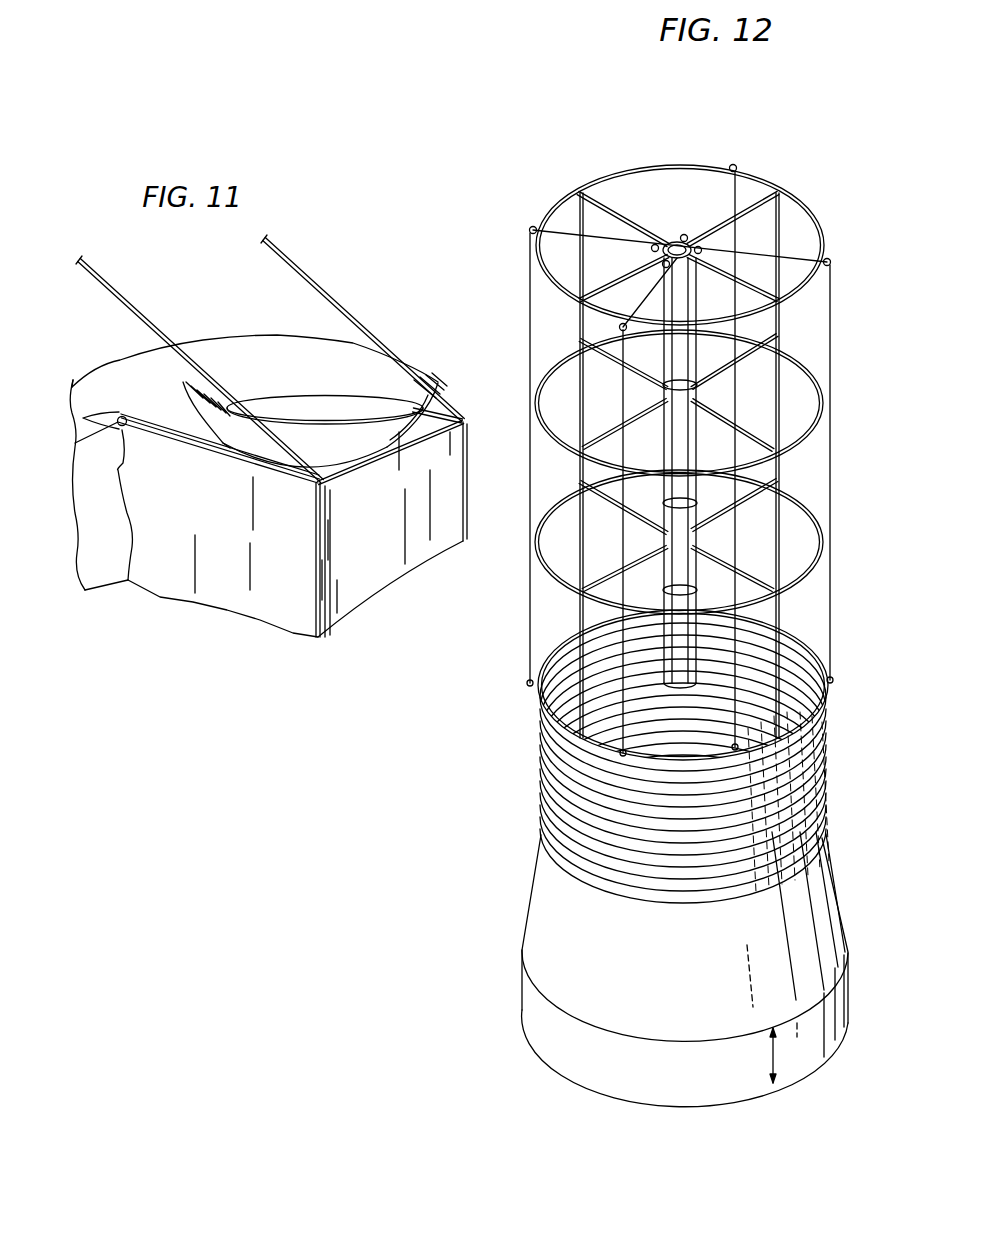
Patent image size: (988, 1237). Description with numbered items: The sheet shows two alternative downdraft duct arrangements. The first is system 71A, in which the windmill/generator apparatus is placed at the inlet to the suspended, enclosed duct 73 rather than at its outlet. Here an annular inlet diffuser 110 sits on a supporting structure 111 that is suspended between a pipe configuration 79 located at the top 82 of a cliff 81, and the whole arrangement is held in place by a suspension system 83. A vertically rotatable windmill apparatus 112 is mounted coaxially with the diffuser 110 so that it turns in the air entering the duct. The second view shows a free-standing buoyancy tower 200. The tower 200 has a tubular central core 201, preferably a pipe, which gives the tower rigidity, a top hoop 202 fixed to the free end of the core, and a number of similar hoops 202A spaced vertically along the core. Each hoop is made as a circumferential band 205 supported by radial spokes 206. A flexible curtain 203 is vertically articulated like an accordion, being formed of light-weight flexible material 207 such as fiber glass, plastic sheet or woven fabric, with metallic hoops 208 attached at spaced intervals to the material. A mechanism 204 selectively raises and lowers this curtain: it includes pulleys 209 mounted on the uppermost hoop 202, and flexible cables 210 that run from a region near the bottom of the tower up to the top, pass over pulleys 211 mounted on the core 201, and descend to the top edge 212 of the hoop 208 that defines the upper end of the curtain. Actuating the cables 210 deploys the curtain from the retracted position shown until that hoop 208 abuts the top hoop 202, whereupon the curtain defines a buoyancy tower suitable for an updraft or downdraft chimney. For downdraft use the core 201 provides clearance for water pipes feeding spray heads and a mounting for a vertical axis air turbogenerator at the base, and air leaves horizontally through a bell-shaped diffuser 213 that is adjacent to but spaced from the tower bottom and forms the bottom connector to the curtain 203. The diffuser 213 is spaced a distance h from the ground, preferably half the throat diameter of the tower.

In FIG. 11, the system 71A is at (452, 368).
In FIG. 11, the duct 73 is at (424, 509).
In FIG. 11, the pipe configuration 79 is at (188, 445).
In FIG. 11, the cliff 81 is at (100, 572).
In FIG. 11, the top 82 is at (131, 370).
In FIG. 11, the suspension system 83 is at (131, 304).
In FIG. 11, the annular inlet diffuser 110 is at (410, 362).
In FIG. 11, the structure 111 is at (424, 426).
In FIG. 11, the windmill apparatus 112 is at (281, 400).
In FIG. 12, the tower 200 is at (814, 136).
In FIG. 12, the central core 201 is at (673, 240).
In FIG. 12, the top hoop 202 is at (808, 210).
In FIG. 12, the hoops 202A is at (802, 436).
In FIG. 12, the flexible curtain 203 is at (830, 736).
In FIG. 12, the mechanism 204 is at (828, 259).
In FIG. 12, the circumferential band 205 is at (742, 170).
In FIG. 12, the radial spokes 206 is at (727, 210).
In FIG. 12, the flexible material 207 is at (795, 780).
In FIG. 12, the metallic hoops 208 is at (793, 623).
In FIG. 12, the pulleys 209 is at (531, 228).
In FIG. 12, the flexible cables 210 is at (740, 396).
In FIG. 12, the pulleys 211 is at (648, 249).
In FIG. 12, the top edge 212 is at (562, 637).
In FIG. 12, the bell-shaped diffuser 213 is at (810, 900).
In FIG. 12, the distance h is at (781, 1055).